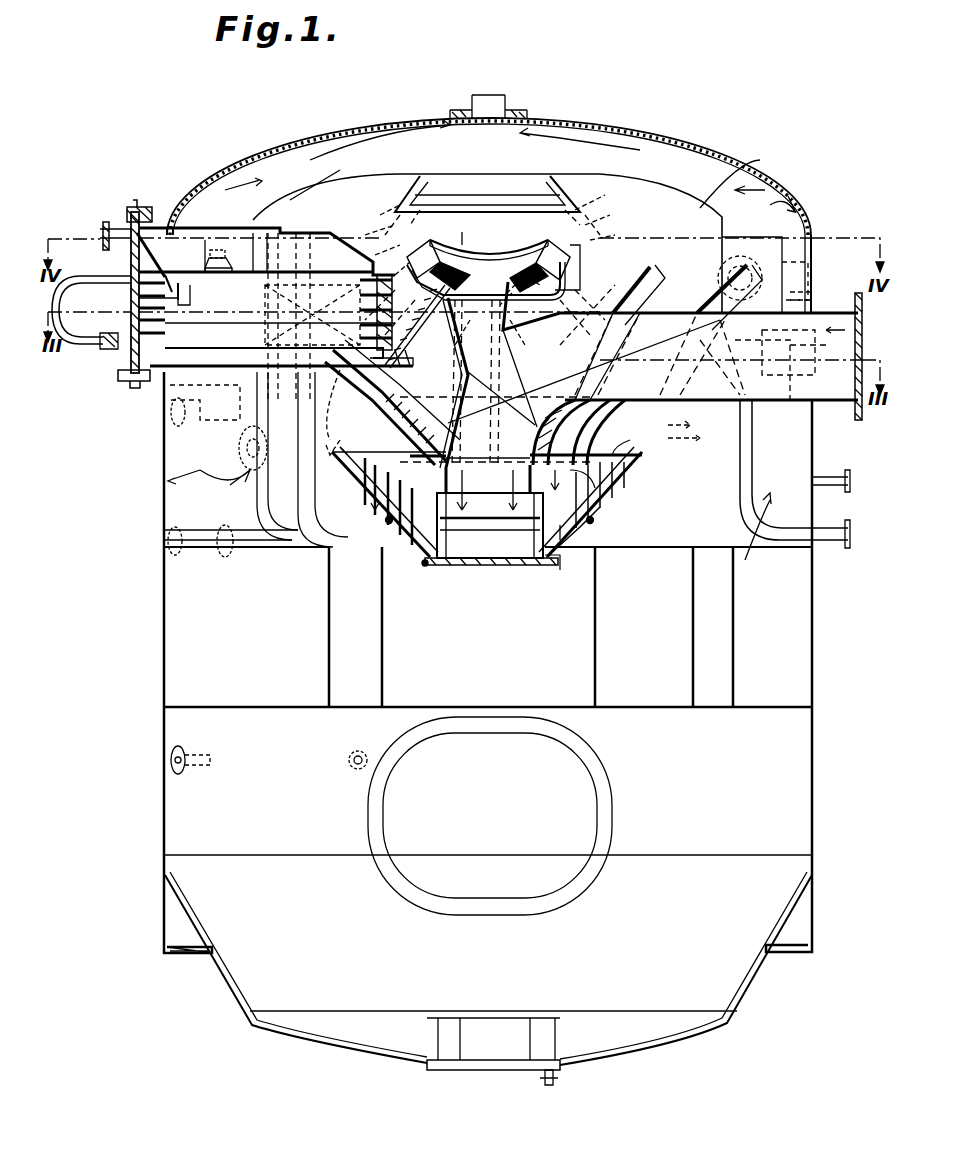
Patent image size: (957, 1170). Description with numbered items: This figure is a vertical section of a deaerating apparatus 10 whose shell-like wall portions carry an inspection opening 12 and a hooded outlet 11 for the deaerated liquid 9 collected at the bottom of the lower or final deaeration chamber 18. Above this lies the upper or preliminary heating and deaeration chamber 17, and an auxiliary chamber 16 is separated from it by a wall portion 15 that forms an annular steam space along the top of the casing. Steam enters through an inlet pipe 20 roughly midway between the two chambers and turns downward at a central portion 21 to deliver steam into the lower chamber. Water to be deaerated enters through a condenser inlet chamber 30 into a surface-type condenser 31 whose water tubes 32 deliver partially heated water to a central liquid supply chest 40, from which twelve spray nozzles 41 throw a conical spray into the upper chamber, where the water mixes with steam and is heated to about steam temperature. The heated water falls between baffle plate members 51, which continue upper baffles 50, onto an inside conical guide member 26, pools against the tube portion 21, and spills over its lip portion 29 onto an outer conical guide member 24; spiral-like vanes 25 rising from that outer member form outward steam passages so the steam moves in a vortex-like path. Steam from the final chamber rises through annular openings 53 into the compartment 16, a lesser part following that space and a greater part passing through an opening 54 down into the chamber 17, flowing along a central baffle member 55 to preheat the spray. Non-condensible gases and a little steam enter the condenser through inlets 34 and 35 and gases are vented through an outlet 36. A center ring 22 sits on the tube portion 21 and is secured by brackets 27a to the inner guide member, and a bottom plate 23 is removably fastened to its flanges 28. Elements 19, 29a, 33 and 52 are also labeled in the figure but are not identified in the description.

The deaerated liquid 9 is at (815, 880).
The deaerating apparatus 10 is at (745, 783).
The hooded outlet 11 is at (435, 1040).
The inspection opening 12 is at (612, 746).
The wall portion 15 is at (731, 172).
The auxiliary or supplementary chamber 16 is at (673, 177).
The upper or preliminary heating and deaeration chamber 17 is at (645, 221).
The lower or final deaeration chamber 18 is at (714, 501).
The tubes 19 is at (597, 620).
The steam inlet pipe 20 is at (826, 312).
The steam inlet tube portion 21 is at (495, 396).
The center ring 22 is at (490, 525).
The bottom plate 23 is at (510, 567).
The outer conical guide member 24 is at (580, 527).
The spiral-like vanes or partitions 25 is at (592, 490).
The inside conical-face guide member 26 is at (638, 438).
The brackets 27a is at (389, 520).
The flanges 28 is at (565, 568).
The annular edge or circular lip portion 29 is at (382, 478).
The hopper wall 29a is at (640, 462).
The condenser inlet chamber 30 is at (92, 342).
The condenser 31 is at (256, 310).
The water tubes 32 is at (198, 300).
The connection 33 is at (139, 298).
The condenser inlet 34 is at (360, 376).
The condenser inlet 35 is at (330, 250).
The gas outlet 36 is at (130, 212).
The liquid supply chest 40 is at (567, 283).
The spray elements or nozzles 41 is at (572, 258).
The upper baffles 50 is at (720, 282).
The baffle plate members 51 is at (585, 468).
The vane 52 is at (730, 352).
The annular openings 53 is at (800, 352).
The opening 54 is at (715, 290).
The central baffle member 55 is at (480, 212).